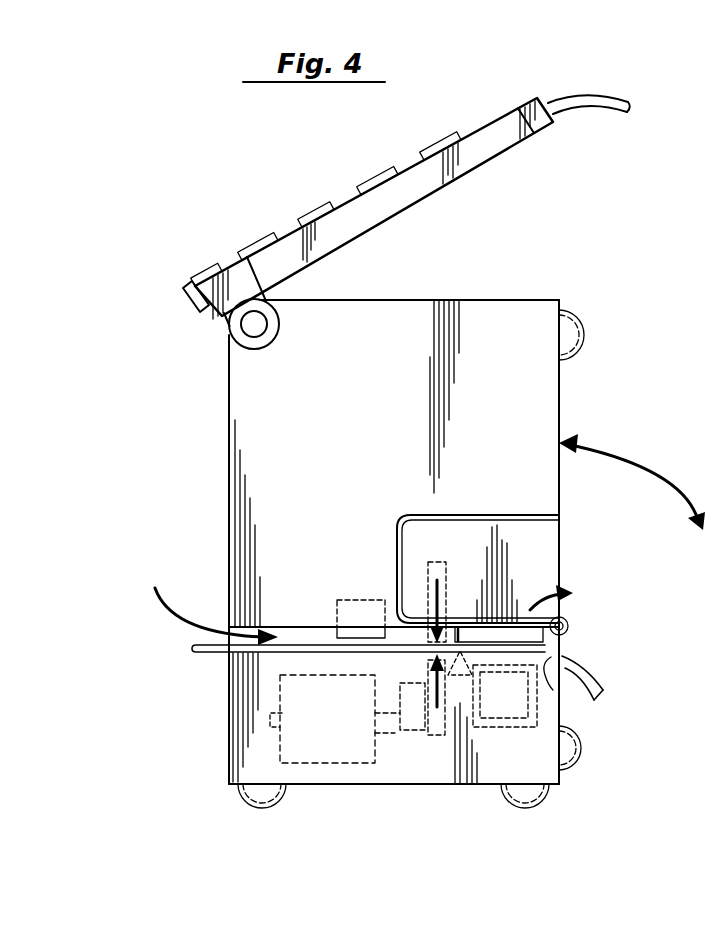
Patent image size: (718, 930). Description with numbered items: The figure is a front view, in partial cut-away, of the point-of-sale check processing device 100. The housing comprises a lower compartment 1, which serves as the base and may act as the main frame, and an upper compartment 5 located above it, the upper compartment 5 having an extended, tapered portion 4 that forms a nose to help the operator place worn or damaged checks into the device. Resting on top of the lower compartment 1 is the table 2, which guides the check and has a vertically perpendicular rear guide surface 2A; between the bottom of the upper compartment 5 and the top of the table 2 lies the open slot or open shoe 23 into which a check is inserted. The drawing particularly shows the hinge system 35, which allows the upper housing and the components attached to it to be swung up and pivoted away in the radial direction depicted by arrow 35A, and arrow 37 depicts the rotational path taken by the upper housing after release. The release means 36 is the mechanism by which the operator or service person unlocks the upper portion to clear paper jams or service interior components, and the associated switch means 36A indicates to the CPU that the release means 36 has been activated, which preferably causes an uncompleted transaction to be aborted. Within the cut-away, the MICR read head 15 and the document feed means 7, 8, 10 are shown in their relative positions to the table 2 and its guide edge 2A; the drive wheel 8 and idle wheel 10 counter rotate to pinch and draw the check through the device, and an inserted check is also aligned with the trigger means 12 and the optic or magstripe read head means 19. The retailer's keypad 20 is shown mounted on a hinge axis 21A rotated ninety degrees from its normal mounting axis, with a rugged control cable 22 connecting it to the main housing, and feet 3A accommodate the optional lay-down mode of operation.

The lower compartment 1 is at (245, 695).
The table 2 is at (212, 650).
The rear guide surface 2A is at (545, 640).
The feet 3A is at (585, 342).
The tapered portion of the upper compartment 4 is at (503, 515).
The upper compartment 5 is at (322, 458).
The document feed means 7 is at (395, 733).
The drive wheel 8 is at (452, 710).
The idle wheel 10 is at (456, 592).
The trigger means 12 is at (487, 618).
The MICR read head 15 is at (500, 720).
The optic read head means 19 is at (375, 600).
The keypad 20 is at (368, 213).
The hinge axis 21A is at (274, 338).
The control cable 22 is at (594, 98).
The open shoe 23 is at (195, 620).
The hinge system 35 is at (569, 623).
The arrow 35A is at (564, 596).
The release means 36 is at (592, 680).
The switch means 36A is at (553, 690).
The arrow 37 is at (656, 478).
The point-of-sale device 100 is at (347, 805).